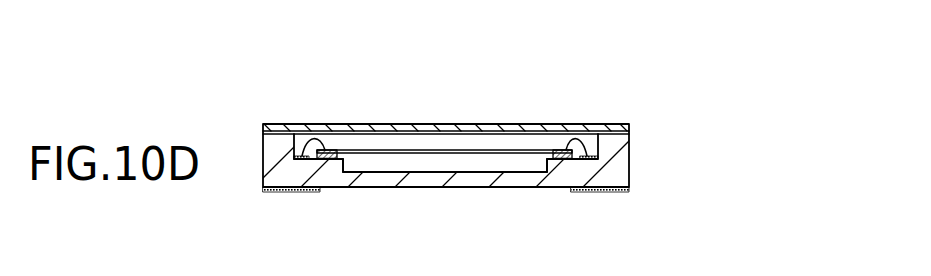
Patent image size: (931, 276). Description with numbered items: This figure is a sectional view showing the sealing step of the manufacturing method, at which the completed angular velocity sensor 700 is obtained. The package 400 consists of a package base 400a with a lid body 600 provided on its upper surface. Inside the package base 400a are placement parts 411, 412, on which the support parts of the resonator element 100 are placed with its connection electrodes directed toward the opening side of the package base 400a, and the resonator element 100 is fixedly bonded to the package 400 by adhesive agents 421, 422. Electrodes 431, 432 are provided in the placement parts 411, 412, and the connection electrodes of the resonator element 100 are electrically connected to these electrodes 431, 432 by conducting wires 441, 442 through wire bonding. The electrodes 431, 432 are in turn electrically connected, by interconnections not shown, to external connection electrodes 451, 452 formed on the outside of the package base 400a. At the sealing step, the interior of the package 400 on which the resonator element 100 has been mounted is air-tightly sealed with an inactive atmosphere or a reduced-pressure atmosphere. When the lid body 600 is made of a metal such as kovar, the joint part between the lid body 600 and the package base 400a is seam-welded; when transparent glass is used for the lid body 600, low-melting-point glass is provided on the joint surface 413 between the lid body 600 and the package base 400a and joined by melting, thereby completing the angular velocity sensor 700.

The angular velocity sensor 700 is at (472, 72).
The package 400 is at (739, 123).
The package base 400a is at (622, 160).
The joint surface 413 is at (609, 126).
The lid body 600 is at (630, 132).
The adhesive agent 421 is at (346, 162).
The adhesive agent 422 is at (546, 162).
The electrode 431 is at (300, 155).
The electrode 432 is at (588, 156).
The external connection electrode 451 is at (290, 193).
The external connection electrode 452 is at (599, 193).
The resonator element 100 is at (410, 150).
The placement part 411 is at (331, 150).
The placement part 412 is at (553, 150).
The conducting wire 441 is at (313, 142).
The conducting wire 442 is at (575, 140).